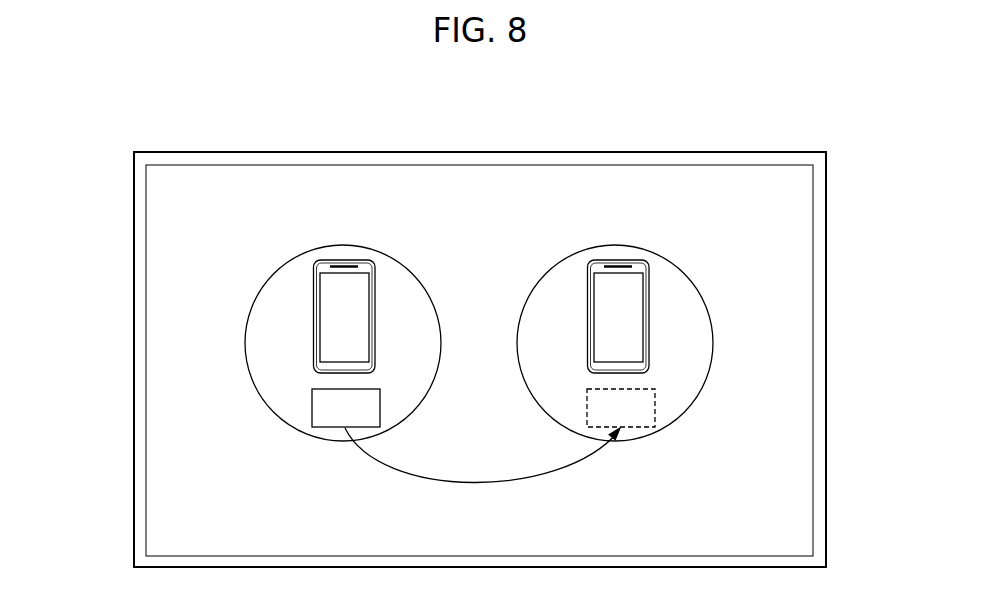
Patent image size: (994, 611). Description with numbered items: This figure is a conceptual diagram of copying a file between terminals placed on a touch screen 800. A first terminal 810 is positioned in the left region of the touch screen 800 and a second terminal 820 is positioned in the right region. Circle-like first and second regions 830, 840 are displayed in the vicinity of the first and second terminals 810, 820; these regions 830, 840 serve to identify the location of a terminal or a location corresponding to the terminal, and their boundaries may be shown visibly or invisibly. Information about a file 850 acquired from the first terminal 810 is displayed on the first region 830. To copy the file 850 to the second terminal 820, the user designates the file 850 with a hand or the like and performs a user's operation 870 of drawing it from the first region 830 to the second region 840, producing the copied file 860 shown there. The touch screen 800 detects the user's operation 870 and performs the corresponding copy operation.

The touch screen 800 is at (479, 158).
The first terminal 810 is at (345, 260).
The second terminal 820 is at (618, 260).
The first region 830 is at (243, 344).
The second region 840 is at (713, 344).
The file 850 is at (328, 427).
The copied file object 860 is at (640, 428).
The user's operation 870 is at (478, 455).